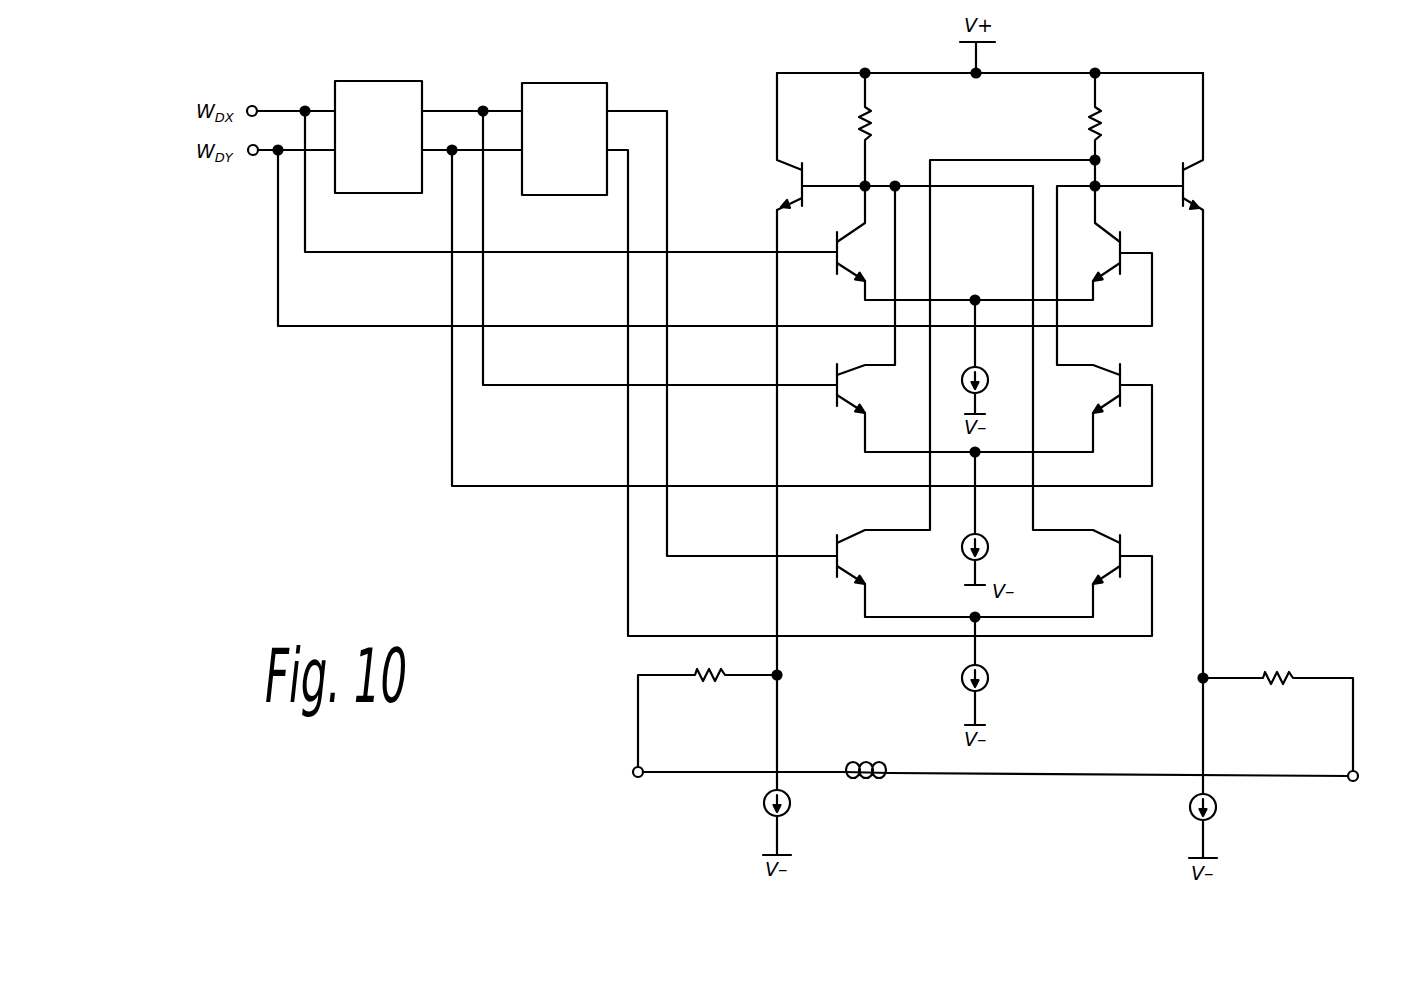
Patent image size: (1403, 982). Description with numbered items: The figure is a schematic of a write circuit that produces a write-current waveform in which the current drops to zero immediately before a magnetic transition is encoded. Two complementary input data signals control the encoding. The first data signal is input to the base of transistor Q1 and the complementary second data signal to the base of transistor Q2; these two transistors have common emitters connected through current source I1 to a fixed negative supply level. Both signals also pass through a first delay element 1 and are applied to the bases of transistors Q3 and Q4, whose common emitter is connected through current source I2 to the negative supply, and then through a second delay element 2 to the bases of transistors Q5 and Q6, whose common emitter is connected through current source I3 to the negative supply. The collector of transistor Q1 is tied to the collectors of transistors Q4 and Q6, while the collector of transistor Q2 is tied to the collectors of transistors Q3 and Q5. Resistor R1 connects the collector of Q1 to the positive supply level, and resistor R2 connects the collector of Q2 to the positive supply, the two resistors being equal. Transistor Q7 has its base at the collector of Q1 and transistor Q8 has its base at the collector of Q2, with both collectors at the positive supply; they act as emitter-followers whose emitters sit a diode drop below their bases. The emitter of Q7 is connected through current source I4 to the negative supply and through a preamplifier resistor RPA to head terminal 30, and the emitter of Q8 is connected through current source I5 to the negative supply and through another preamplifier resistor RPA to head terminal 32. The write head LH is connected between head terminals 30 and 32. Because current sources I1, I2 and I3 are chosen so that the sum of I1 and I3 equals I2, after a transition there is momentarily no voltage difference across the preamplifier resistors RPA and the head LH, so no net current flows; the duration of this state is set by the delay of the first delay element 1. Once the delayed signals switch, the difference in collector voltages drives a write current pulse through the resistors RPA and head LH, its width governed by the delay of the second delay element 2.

The head terminal 30 is at (636, 777).
The head terminal 32 is at (1351, 781).
The first delay element 1 is at (378, 137).
The second delay element 2 is at (564, 139).
The transistor Q1 is at (854, 256).
The transistor Q2 is at (1096, 256).
The transistor Q3 is at (854, 388).
The transistor Q4 is at (1096, 388).
The transistor Q5 is at (854, 559).
The transistor Q6 is at (1096, 559).
The transistor Q7 is at (775, 141).
The transistor Q8 is at (1204, 141).
The resistor R1 is at (882, 129).
The resistor R2 is at (1112, 116).
The current source I1 is at (985, 380).
The current source I2 is at (985, 547).
The current source I3 is at (985, 679).
The current source I4 is at (787, 804).
The current source I5 is at (1213, 808).
The preamplifier resistor RPA is at (995, 720).
The write head LH is at (867, 791).